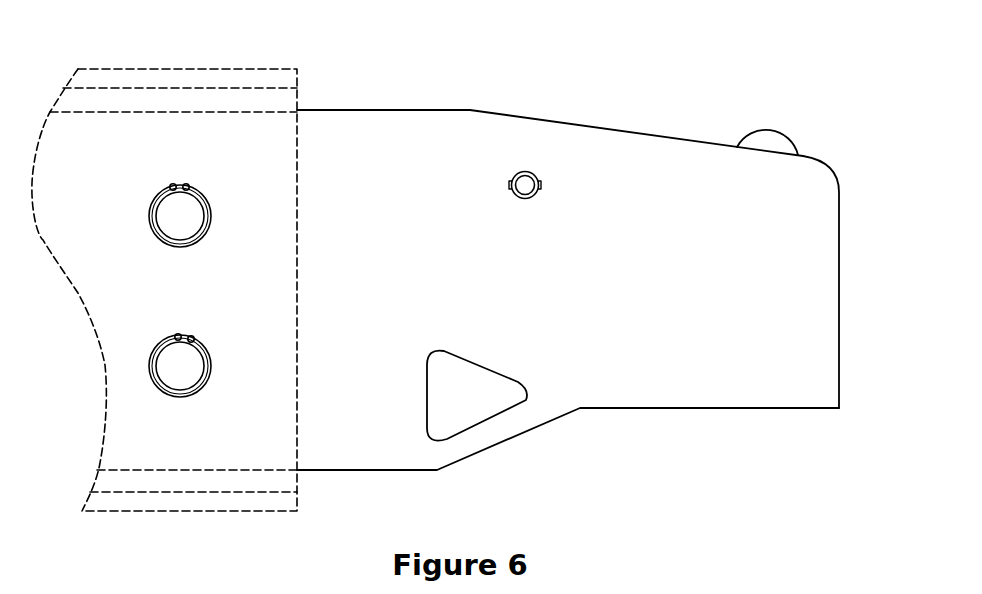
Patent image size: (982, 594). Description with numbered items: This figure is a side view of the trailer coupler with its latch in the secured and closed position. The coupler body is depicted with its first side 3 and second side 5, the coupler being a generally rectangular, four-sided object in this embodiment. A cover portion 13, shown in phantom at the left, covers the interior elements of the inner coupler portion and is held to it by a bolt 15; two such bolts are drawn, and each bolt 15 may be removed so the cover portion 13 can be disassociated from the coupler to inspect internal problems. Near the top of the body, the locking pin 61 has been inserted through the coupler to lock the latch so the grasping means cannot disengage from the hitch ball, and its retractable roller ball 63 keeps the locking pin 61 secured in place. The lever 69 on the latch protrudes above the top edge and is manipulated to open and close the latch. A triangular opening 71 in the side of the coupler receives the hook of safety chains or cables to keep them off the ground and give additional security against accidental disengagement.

The first side 3 is at (670, 364).
The second side 5 is at (839, 218).
The cover portion 13 is at (253, 161).
The bolt 15 is at (172, 203).
The locking pin 61 is at (521, 172).
The retractable roller ball 63 is at (543, 185).
The lever 69 is at (740, 137).
The triangular opening 71 is at (477, 410).